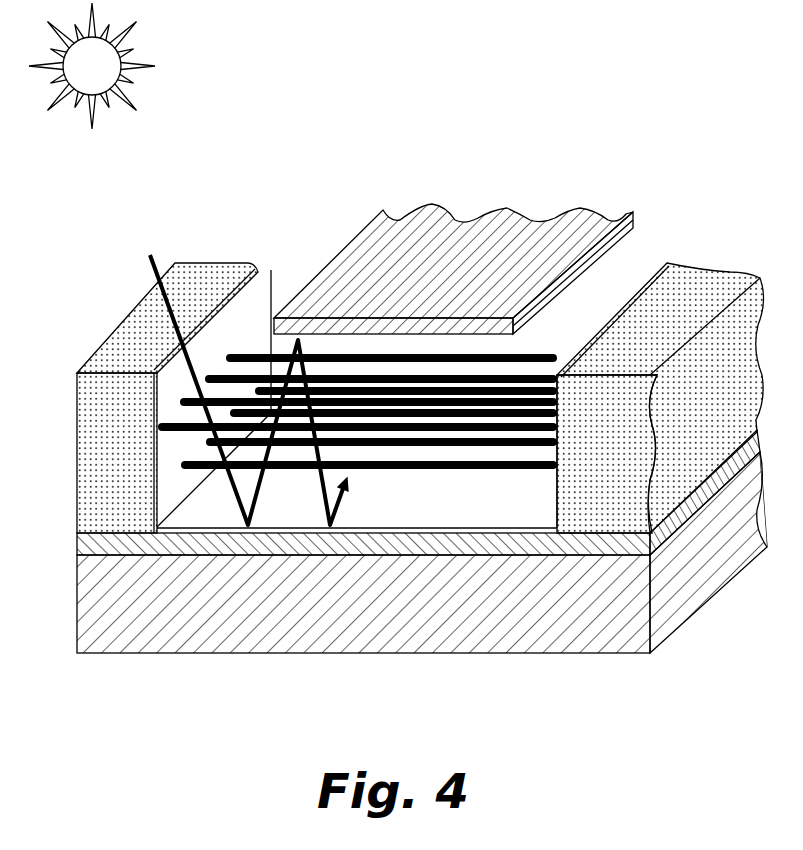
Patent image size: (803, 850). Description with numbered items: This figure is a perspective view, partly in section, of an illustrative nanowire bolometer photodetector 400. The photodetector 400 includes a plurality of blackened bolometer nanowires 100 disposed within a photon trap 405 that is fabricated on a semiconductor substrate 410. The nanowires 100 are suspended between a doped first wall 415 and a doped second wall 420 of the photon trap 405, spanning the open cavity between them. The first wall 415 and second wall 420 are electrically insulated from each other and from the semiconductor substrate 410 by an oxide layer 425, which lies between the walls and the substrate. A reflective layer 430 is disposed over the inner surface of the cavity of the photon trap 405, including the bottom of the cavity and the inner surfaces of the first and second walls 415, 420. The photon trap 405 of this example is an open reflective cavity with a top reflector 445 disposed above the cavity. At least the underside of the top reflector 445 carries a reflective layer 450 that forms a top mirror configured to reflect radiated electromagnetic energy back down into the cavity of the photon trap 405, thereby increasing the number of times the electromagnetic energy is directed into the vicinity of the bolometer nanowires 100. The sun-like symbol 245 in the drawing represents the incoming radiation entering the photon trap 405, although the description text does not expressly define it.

The sun / light source 245 is at (111, 77).
The photodetector 400 is at (655, 62).
The photon trap 405 is at (321, 220).
The semiconductor substrate 410 is at (62, 558).
The first wall 415 is at (201, 267).
The second wall 420 is at (697, 278).
The oxide layer 425 is at (62, 533).
The reflective layer 430 is at (260, 274).
The top reflector 445 is at (515, 214).
The reflective layer 450 is at (637, 219).
The blackened bolometer nanowires 100 is at (530, 352).